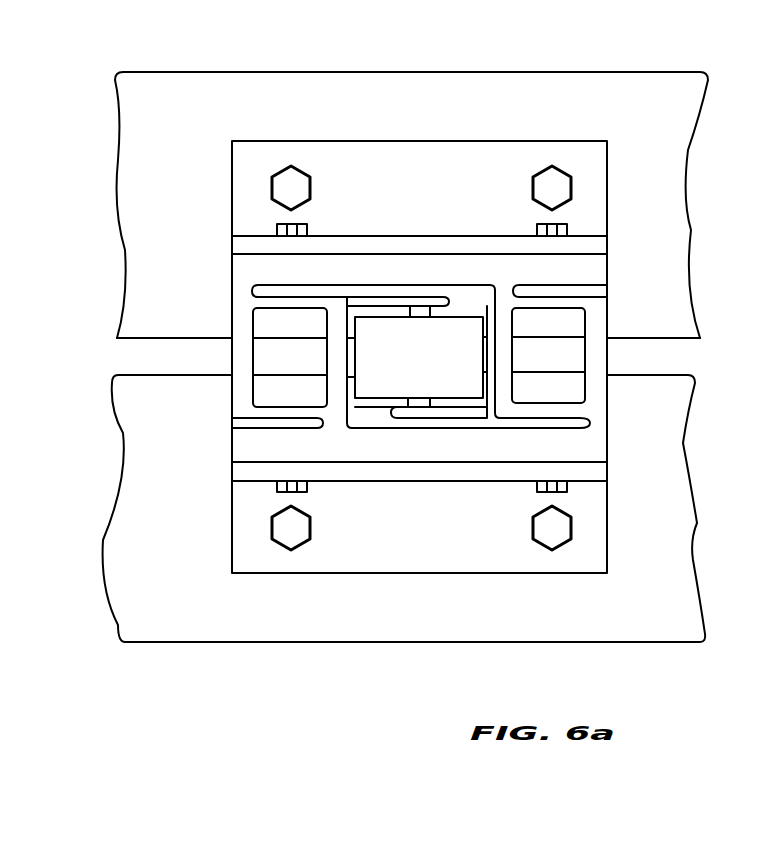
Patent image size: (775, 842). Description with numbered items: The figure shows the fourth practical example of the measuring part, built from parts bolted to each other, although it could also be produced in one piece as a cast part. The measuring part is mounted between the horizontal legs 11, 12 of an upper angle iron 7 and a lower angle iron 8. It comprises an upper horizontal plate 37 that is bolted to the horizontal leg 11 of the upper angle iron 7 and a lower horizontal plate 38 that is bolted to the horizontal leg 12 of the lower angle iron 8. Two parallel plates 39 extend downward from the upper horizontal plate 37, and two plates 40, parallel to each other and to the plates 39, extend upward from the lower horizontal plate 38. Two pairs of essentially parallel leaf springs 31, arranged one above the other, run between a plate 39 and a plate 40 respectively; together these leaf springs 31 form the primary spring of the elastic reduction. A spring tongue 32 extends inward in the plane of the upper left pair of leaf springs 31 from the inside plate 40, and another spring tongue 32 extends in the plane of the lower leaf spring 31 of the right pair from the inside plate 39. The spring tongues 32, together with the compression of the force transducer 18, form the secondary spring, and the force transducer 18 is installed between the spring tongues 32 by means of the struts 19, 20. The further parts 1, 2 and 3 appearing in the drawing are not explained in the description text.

The lower plate 1 is at (670, 625).
The upper plate 2 is at (680, 88).
The connecting member 3 is at (770, 358).
The upper angle iron 7 is at (590, 183).
The lower angle iron 8 is at (587, 520).
The horizontal leg 11 is at (595, 243).
The horizontal leg 12 is at (583, 467).
The force transducer 18 is at (403, 367).
The strut 19 is at (423, 312).
The strut 20 is at (419, 403).
The leaf springs 31 is at (290, 305).
The spring tongue 32 is at (383, 300).
The upper horizontal plate 37 is at (585, 273).
The lower horizontal plate 38 is at (263, 446).
The plates 39 is at (243, 367).
The plates 40 is at (333, 350).